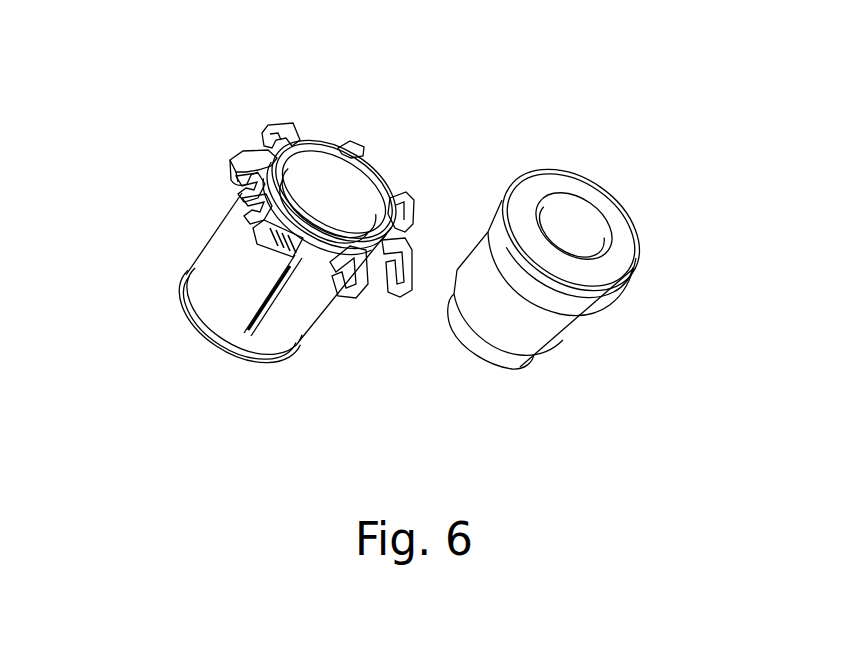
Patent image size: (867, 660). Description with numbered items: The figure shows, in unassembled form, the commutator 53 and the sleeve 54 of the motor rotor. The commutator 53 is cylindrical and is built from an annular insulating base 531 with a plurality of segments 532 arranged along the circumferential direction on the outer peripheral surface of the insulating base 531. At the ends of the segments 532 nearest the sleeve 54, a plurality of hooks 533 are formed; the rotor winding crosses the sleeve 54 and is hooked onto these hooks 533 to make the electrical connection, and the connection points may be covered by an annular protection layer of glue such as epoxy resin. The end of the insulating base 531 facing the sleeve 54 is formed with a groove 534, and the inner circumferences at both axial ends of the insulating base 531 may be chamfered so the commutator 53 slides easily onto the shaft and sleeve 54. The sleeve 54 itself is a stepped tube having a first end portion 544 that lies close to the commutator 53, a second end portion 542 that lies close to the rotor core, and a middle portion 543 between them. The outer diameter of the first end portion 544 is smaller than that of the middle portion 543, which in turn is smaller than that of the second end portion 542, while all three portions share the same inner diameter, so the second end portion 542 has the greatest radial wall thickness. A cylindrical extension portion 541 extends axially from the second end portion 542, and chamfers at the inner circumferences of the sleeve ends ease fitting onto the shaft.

The commutator 53 is at (270, 364).
The insulating base 531 is at (315, 138).
The segments 532 is at (223, 283).
The hooks 533 is at (247, 157).
The groove 534 is at (347, 187).
The sleeve 54 is at (595, 288).
The cylindrical extension portion 541 is at (600, 292).
The second end portion 542 is at (577, 303).
The middle portion 543 is at (550, 328).
The first end portion 544 is at (520, 367).